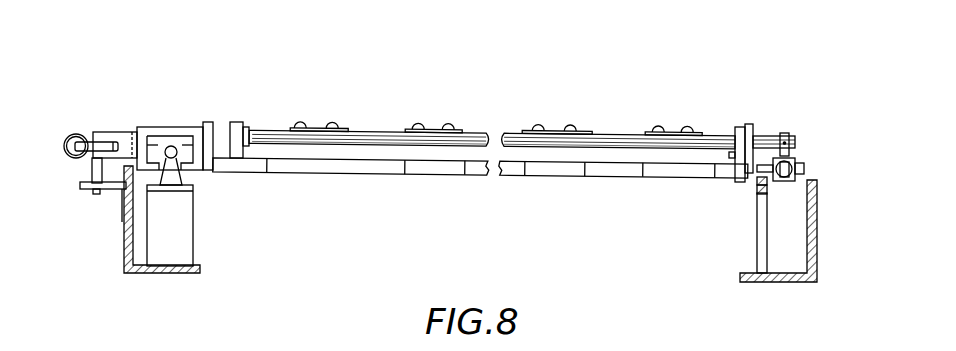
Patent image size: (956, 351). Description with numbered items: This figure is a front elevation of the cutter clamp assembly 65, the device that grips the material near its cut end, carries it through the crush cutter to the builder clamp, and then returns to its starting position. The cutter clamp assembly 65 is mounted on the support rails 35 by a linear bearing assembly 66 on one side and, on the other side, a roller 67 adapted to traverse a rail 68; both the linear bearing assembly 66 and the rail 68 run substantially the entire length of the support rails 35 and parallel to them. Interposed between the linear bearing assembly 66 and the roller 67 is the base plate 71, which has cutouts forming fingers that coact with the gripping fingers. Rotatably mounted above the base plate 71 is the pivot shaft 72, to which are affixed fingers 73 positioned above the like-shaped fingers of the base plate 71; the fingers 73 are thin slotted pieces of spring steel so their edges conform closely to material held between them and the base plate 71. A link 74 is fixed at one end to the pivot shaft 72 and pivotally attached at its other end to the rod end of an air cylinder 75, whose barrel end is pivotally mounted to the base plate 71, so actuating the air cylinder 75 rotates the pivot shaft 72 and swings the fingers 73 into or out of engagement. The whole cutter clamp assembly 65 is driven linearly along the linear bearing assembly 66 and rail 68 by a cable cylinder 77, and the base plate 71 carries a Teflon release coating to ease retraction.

The support rails 35 is at (131, 273).
The cutter clamp assembly 65 is at (470, 112).
The linear bearing assembly 66 is at (176, 157).
The roller 67 is at (757, 180).
The rail 68 is at (759, 193).
The base plate 71 is at (576, 175).
The pivot shaft 72 is at (282, 133).
The fingers 73 is at (585, 131).
The link 74 is at (784, 133).
The air cylinder 75 is at (792, 160).
The cable cylinder 77 is at (80, 134).